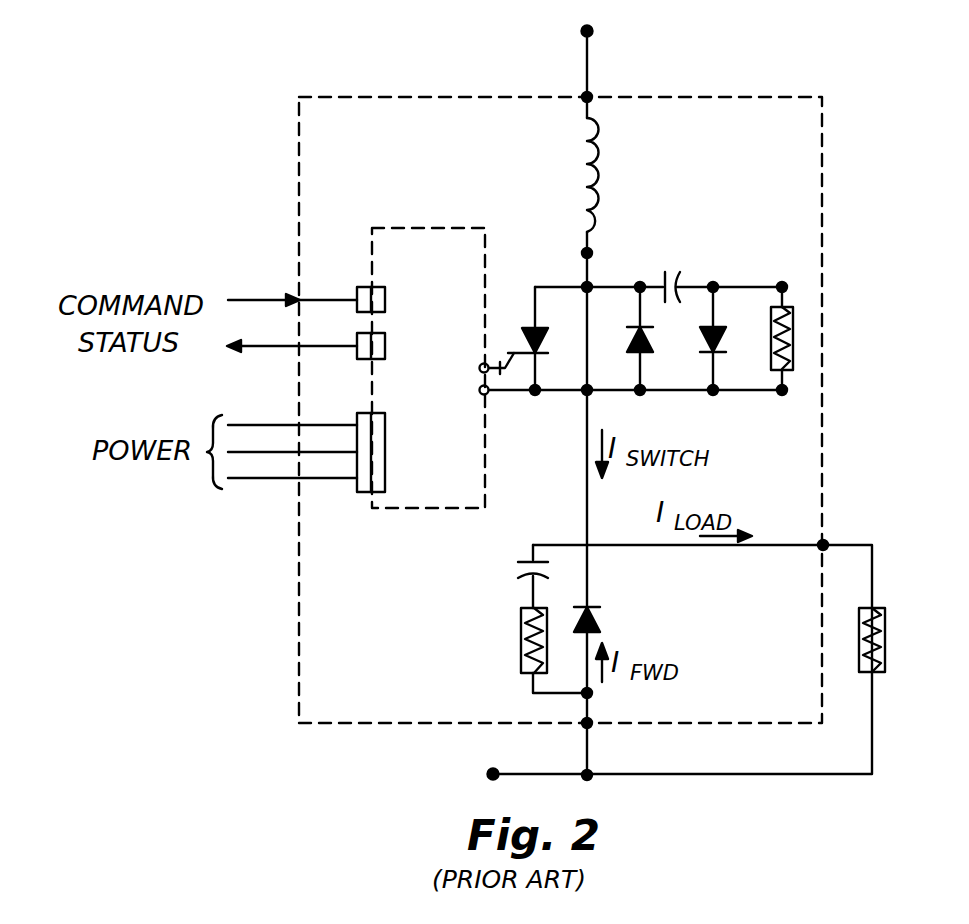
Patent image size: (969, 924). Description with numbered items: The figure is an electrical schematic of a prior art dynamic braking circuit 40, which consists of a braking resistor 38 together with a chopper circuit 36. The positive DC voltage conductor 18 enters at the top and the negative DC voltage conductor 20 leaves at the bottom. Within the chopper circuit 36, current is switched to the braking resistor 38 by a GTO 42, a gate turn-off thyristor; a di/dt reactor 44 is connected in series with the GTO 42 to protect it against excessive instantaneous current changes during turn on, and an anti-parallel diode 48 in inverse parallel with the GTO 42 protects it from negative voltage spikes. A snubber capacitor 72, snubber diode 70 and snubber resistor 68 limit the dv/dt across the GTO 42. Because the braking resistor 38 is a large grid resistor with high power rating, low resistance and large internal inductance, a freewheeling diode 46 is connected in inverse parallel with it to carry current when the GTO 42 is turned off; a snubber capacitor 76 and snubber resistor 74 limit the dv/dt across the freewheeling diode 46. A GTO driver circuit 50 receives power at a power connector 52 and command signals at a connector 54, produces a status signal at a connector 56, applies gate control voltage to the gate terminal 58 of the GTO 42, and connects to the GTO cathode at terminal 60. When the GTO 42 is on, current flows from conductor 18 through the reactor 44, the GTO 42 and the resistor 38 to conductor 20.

The positive DC voltage conductor 18 is at (590, 28).
The negative DC voltage conductor 20 is at (493, 772).
The chopper circuit 36 is at (826, 246).
The braking resistor 38 is at (857, 660).
The dynamic braking circuit 40 is at (262, 771).
The GTO 42 is at (548, 333).
The di/dt reactor 44 is at (597, 196).
The freewheeling diode 46 is at (598, 624).
The anti-parallel diode 48 is at (634, 352).
The GTO driver circuit 50 is at (380, 226).
The power connector 52 is at (385, 441).
The connector 54 is at (385, 299).
The connector 56 is at (385, 346).
The gate terminal 58 is at (479, 367).
The terminal 60 is at (479, 390).
The snubber resistor 68 is at (794, 370).
The snubber diode 70 is at (702, 354).
The snubber capacitor 72 is at (679, 300).
The snubber resistor 74 is at (522, 647).
The snubber capacitor 76 is at (520, 566).